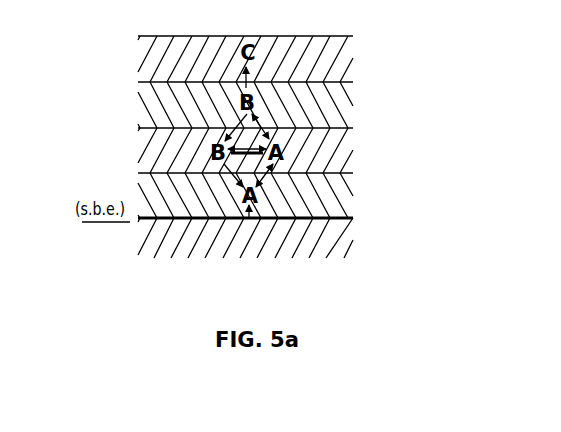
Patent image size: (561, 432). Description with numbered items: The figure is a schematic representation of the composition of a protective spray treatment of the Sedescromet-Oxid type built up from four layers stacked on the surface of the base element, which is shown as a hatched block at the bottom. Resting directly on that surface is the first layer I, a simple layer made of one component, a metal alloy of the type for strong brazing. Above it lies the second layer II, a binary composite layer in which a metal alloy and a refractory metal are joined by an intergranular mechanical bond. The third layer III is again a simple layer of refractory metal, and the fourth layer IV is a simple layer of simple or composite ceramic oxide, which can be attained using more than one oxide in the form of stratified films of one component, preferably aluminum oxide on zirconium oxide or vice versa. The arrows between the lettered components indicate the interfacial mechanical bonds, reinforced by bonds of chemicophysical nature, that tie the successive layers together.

The fourth layer IV is at (377, 33).
The third layer III is at (377, 77).
The second layer II is at (377, 125).
The first layer I is at (377, 172).